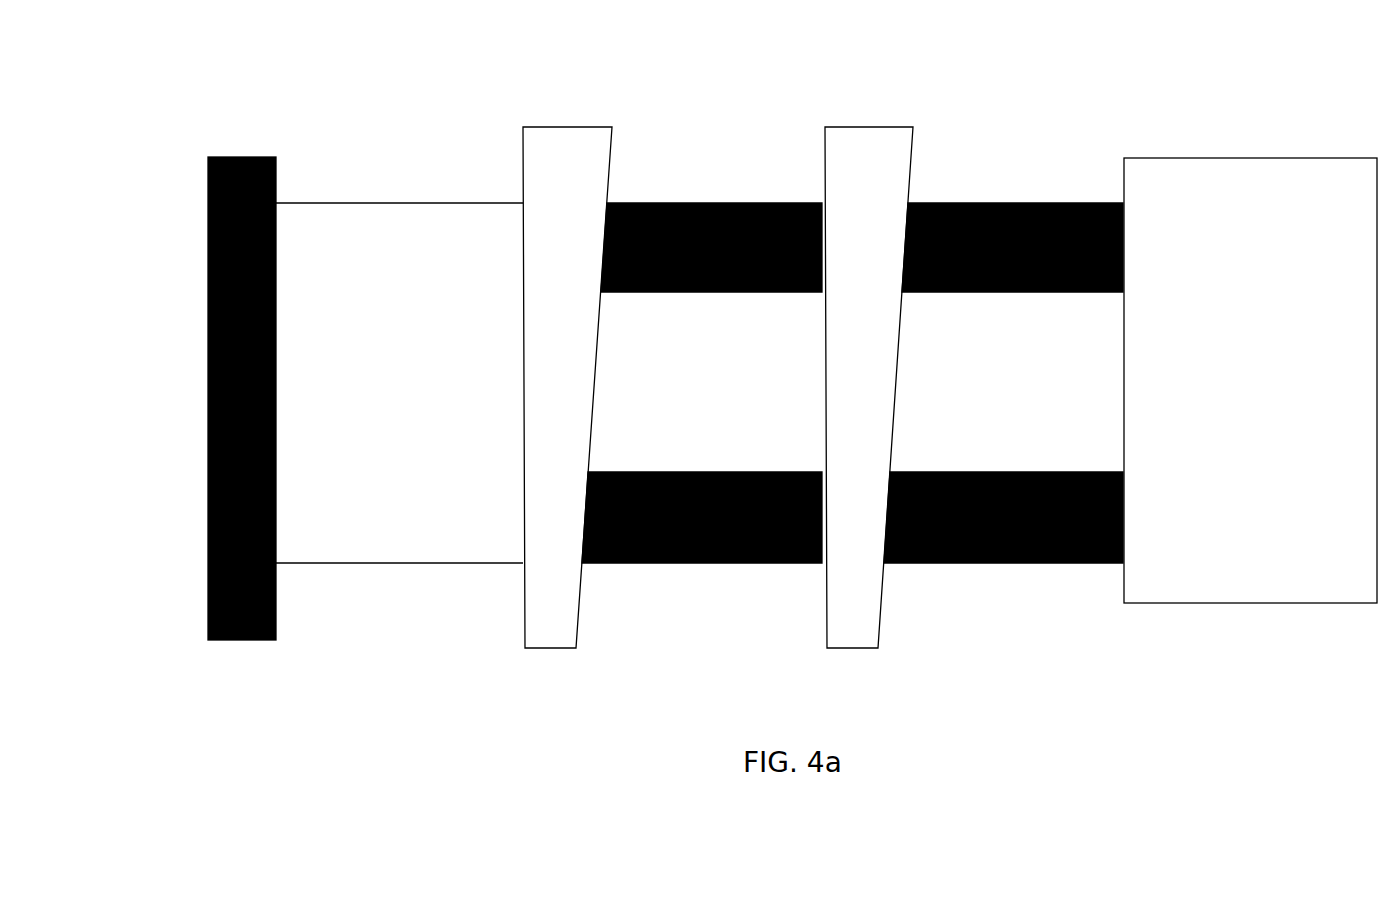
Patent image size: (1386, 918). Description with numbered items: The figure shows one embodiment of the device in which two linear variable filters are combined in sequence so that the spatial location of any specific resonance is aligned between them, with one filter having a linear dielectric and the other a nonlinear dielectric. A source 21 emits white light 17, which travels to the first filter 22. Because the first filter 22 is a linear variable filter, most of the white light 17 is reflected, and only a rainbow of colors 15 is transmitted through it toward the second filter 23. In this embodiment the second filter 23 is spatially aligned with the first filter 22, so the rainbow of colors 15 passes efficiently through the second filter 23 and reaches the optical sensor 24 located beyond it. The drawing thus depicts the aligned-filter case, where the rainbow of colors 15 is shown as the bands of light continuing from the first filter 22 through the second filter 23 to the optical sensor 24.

The rainbow of colors 15 is at (691, 219).
The white light 17 is at (453, 245).
The source 21 is at (228, 468).
The first filter 22 is at (554, 150).
The second filter 23 is at (857, 150).
The optical sensor 24 is at (1255, 205).